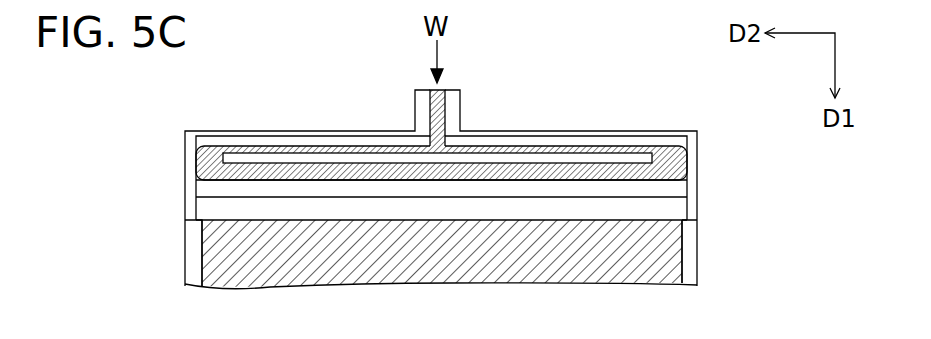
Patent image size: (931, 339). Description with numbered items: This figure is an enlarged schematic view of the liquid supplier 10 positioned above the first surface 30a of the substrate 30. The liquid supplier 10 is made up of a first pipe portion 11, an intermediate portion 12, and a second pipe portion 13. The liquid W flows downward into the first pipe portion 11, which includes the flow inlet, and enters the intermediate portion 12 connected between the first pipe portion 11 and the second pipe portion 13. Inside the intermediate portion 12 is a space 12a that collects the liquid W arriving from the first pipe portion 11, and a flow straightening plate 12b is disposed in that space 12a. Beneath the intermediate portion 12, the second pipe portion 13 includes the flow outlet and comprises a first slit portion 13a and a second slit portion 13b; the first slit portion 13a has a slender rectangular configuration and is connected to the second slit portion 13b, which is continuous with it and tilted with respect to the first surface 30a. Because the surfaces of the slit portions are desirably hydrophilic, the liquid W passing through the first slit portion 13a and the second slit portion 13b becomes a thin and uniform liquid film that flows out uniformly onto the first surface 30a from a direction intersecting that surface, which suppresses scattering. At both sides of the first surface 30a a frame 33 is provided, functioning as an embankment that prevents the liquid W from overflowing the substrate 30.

The liquid supplier 10 is at (573, 84).
The first pipe portion 11 is at (437, 110).
The intermediate portion 12 is at (272, 150).
The space 12a is at (208, 158).
The flow straightening plate 12b is at (330, 160).
The second pipe portion 13 is at (523, 185).
The first slit portion 13a is at (690, 186).
The second slit portion 13b is at (690, 210).
The substrate 30 is at (227, 245).
The first surface 30a is at (227, 268).
The frame 33 is at (192, 247).